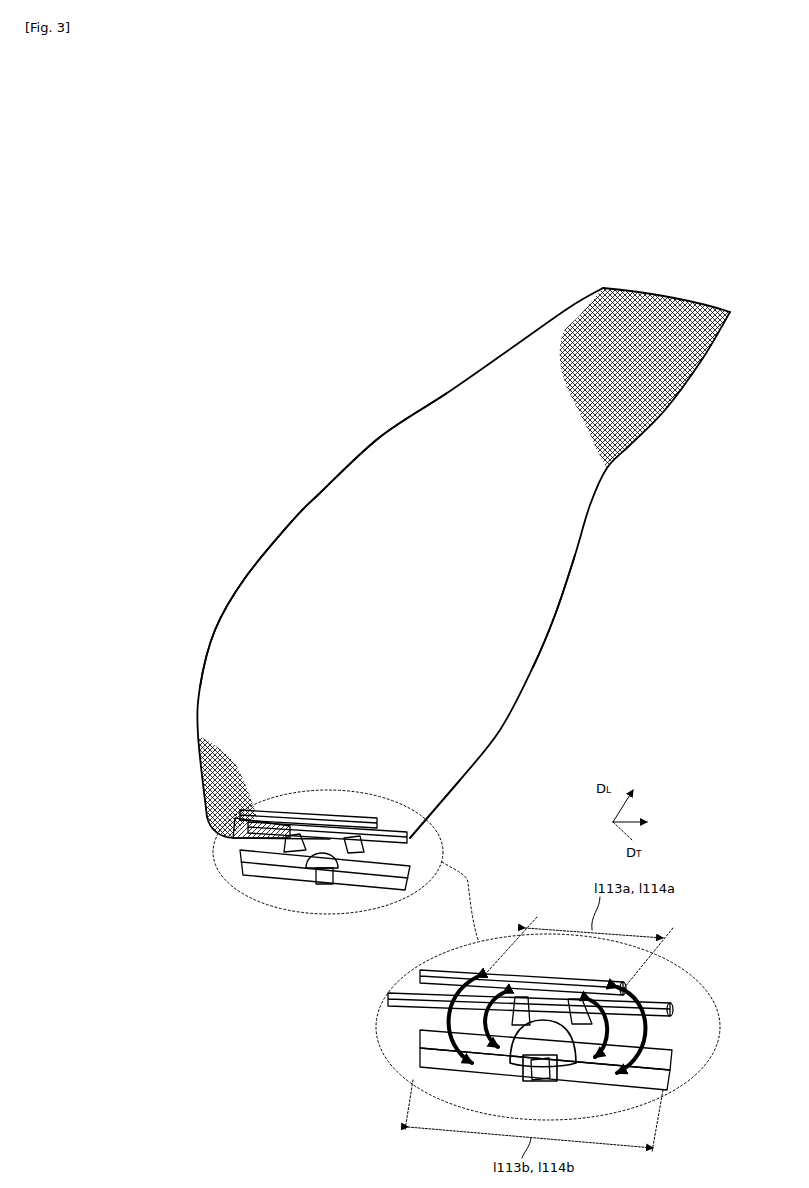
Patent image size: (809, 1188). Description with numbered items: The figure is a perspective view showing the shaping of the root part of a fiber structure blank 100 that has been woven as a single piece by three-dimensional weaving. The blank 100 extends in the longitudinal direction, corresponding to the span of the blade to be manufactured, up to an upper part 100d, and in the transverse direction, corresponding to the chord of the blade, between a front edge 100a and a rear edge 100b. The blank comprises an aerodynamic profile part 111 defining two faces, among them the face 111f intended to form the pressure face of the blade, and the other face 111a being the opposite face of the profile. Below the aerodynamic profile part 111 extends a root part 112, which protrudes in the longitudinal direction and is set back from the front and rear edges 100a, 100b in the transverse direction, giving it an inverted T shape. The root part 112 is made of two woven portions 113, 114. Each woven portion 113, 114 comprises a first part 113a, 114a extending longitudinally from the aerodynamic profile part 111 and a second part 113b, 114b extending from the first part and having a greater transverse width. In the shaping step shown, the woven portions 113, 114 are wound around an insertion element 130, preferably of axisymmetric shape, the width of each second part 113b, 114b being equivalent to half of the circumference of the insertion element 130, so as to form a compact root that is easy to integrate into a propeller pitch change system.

The fiber structure blank 100 is at (328, 383).
The front edge 100a is at (317, 497).
The rear edge 100b is at (528, 673).
The upper part 100d is at (667, 298).
The aerodynamic profile part 111 is at (520, 582).
The blade surface 111a is at (300, 608).
The face 111f is at (466, 775).
The root part 112 is at (430, 848).
The woven portion 113 is at (574, 969).
The first part 113a is at (627, 982).
The second part 113b is at (660, 995).
The woven portion 114 is at (601, 1069).
The first part 114a is at (663, 1093).
The second part 114b is at (667, 1088).
The insertion element 130 is at (322, 875).